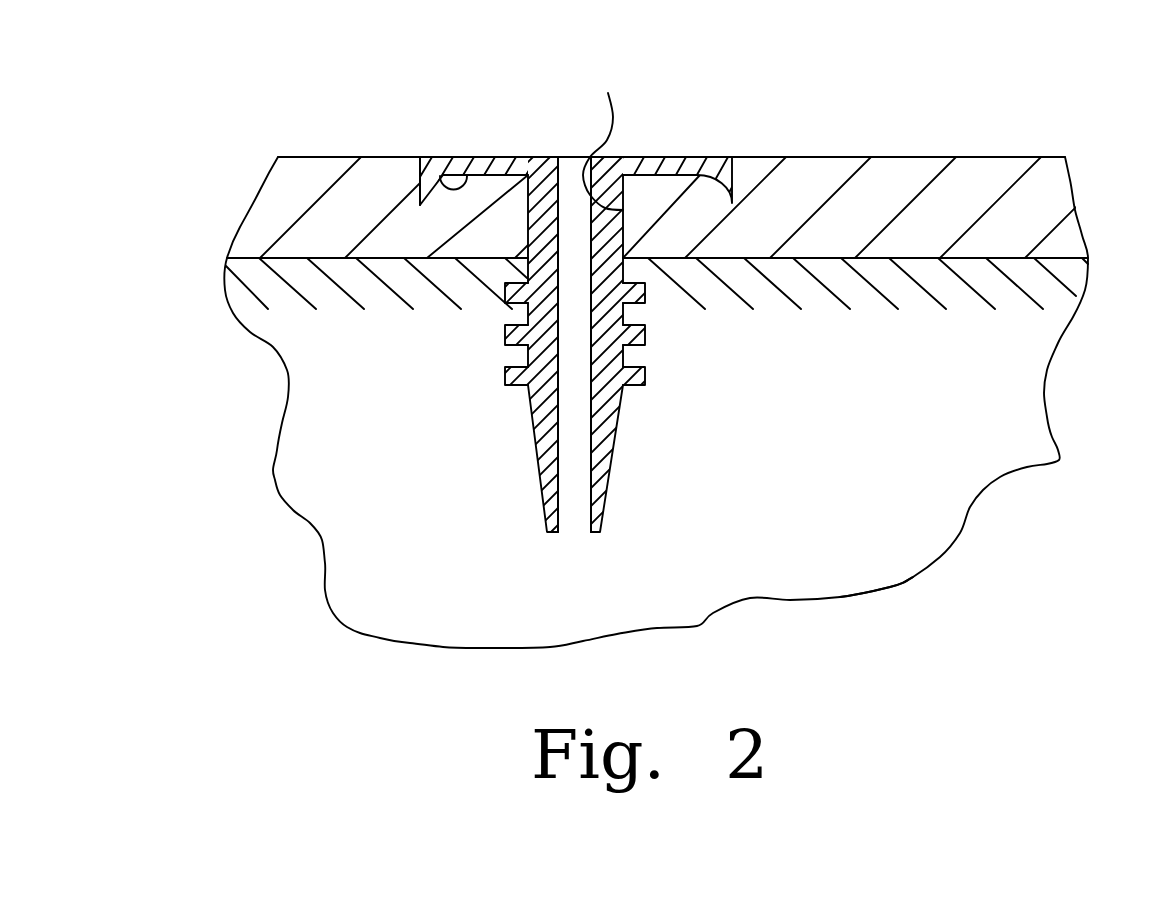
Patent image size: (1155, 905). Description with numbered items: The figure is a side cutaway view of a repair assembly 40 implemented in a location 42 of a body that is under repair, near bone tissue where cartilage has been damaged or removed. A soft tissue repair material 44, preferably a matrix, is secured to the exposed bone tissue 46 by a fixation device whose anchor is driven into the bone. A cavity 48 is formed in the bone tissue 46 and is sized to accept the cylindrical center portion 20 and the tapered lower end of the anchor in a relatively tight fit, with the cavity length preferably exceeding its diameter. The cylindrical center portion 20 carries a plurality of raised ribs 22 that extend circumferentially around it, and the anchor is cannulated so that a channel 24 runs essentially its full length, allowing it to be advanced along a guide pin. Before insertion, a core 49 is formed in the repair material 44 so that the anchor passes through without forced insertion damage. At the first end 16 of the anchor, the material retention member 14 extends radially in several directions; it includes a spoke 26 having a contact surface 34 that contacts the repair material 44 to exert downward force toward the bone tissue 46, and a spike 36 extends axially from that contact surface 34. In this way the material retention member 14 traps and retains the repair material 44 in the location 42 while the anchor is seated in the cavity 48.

The material retention member 14 is at (632, 137).
The first end 16 is at (550, 137).
The cylindrical center portion 20 is at (623, 313).
The raised ribs 22 is at (505, 285).
The channel 24 is at (557, 480).
The spoke 26 is at (482, 158).
The contact surface 34 is at (452, 168).
The spike 36 is at (420, 176).
The assembly 40 is at (968, 97).
The location 42 is at (1007, 512).
The soft tissue repair material 44 is at (1058, 192).
The bone tissue 46 is at (890, 575).
The cavity 48 is at (590, 483).
The core 49 is at (604, 135).